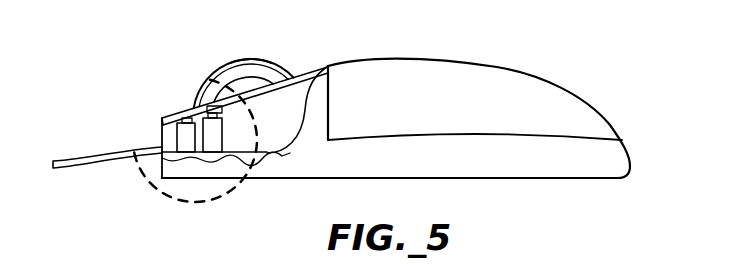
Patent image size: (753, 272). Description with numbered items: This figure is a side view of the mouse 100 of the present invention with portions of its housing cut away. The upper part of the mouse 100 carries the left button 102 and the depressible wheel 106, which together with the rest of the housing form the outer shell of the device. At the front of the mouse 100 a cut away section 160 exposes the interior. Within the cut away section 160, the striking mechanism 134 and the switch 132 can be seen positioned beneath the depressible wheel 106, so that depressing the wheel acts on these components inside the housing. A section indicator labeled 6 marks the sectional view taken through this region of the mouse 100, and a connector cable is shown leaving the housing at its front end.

The mouse 100 is at (448, 41).
The left button 102 is at (244, 82).
The depressible wheel 106 is at (255, 60).
The switch 132 is at (162, 142).
The striking mechanism 134 is at (223, 140).
The cut away section 160 is at (286, 112).
The section line 6- 6 is at (200, 77).